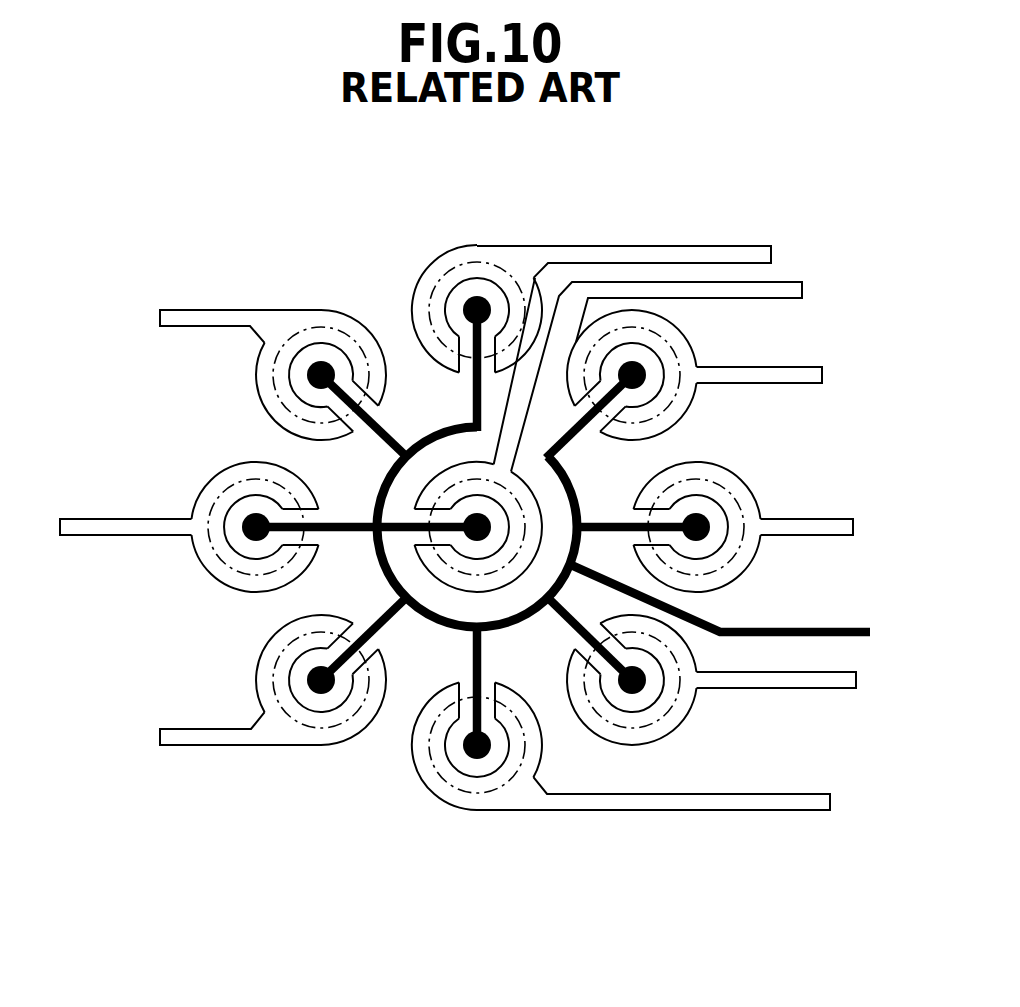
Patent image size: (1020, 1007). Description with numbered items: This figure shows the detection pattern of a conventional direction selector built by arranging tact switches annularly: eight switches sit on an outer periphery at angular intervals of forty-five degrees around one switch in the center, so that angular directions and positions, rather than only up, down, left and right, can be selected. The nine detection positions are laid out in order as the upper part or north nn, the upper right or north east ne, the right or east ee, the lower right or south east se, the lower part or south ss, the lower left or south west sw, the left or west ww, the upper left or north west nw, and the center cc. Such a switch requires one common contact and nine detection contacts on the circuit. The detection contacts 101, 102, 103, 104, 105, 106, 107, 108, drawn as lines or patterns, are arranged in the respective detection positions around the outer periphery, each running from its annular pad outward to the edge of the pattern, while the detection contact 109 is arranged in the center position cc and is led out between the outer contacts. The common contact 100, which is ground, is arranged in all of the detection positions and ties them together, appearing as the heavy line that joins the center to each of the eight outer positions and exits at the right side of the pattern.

The common contact 100 is at (851, 628).
The detection contact 101 is at (666, 256).
The detection contact 102 is at (810, 367).
The detection contact 103 is at (835, 520).
The detection contact 104 is at (808, 689).
The detection contact 105 is at (709, 811).
The detection contact 106 is at (189, 746).
The detection contact 107 is at (96, 530).
The detection contact 108 is at (191, 318).
The detection contact 109 is at (792, 282).
The center detection position cc is at (452, 484).
The north detection position nn is at (494, 263).
The north east detection position ne is at (674, 351).
The east detection position ee is at (731, 492).
The south east detection position se is at (667, 716).
The south detection position ss is at (428, 768).
The south west detection position sw is at (282, 647).
The west detection position ww is at (232, 484).
The north west detection position nw is at (321, 328).